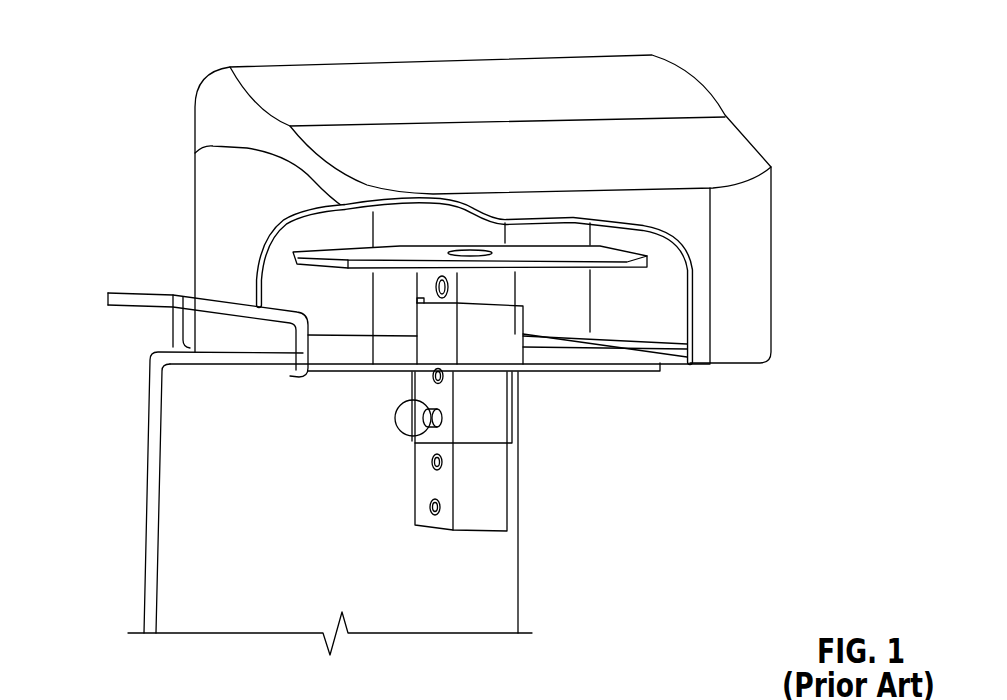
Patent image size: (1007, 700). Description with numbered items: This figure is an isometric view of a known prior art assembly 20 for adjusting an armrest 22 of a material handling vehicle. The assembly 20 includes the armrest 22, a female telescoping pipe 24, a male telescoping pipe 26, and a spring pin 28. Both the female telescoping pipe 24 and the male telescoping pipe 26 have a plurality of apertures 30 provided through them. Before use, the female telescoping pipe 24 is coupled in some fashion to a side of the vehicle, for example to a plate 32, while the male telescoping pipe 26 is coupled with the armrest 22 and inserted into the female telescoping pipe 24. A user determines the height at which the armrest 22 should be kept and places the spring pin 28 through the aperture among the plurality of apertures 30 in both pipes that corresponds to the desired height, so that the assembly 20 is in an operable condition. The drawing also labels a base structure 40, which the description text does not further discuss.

The assembly 20 is at (100, 42).
The armrest 22 is at (760, 245).
The female telescoping pipe 24 is at (512, 412).
The male telescoping pipe 26 is at (497, 473).
The spring pin 28 is at (423, 420).
The apertures 30 is at (432, 379).
The plate 32 is at (300, 373).
The base 40 is at (82, 699).